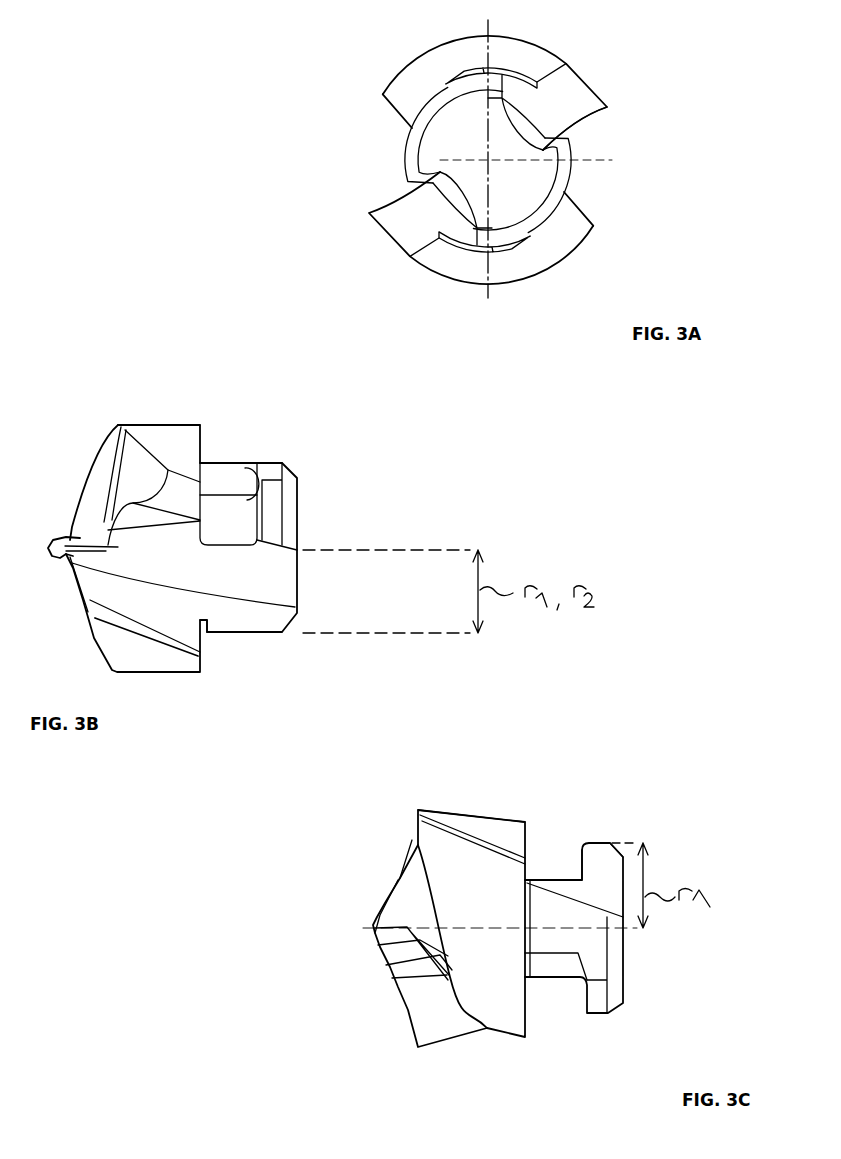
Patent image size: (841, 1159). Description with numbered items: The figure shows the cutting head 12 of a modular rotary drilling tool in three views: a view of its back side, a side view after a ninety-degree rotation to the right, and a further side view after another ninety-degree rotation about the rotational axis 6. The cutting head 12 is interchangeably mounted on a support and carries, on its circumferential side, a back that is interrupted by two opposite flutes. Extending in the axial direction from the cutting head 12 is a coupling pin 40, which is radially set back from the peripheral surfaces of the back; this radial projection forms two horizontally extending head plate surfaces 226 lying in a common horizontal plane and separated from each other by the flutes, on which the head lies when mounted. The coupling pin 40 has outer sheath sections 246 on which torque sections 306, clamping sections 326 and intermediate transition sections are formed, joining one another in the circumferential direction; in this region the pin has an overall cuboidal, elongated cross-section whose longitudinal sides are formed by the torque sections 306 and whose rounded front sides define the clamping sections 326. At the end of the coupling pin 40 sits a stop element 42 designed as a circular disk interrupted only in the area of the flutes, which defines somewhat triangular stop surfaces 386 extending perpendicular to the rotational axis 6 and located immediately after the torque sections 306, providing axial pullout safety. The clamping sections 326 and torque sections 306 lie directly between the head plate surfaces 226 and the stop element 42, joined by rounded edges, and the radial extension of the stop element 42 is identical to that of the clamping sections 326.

In FIG. 3A, the cutting head 12 is at (649, 55).
In FIG. 3B, the cutting head 12 is at (432, 461).
In FIG. 3C, the cutting head 12 is at (627, 733).
In FIG. 3A, the stop element 42 is at (566, 186).
In FIG. 3B, the stop element 42 is at (270, 517).
In FIG. 3C, the stop element 42 is at (597, 853).
In FIG. 3A, the head plate surface 226 is at (557, 243).
In FIG. 3B, the head plate surface 226 is at (200, 438).
In FIG. 3C, the head plate surface 226 is at (536, 827).
In FIG. 3B, the clamping section 326 is at (228, 463).
In FIG. 3B, the stop surface 386 is at (247, 470).
In FIG. 3C, the stop surface 386 is at (582, 860).
In FIG. 3B, the rotational axis 6 is at (66, 537).
In FIG. 3B, the coupling pin 40 is at (270, 573).
In FIG. 3C, the coupling pin 40 is at (565, 927).
In FIG. 3B, the torque section 306 is at (235, 518).
In FIG. 3B, the outer sheath section 246 is at (225, 632).